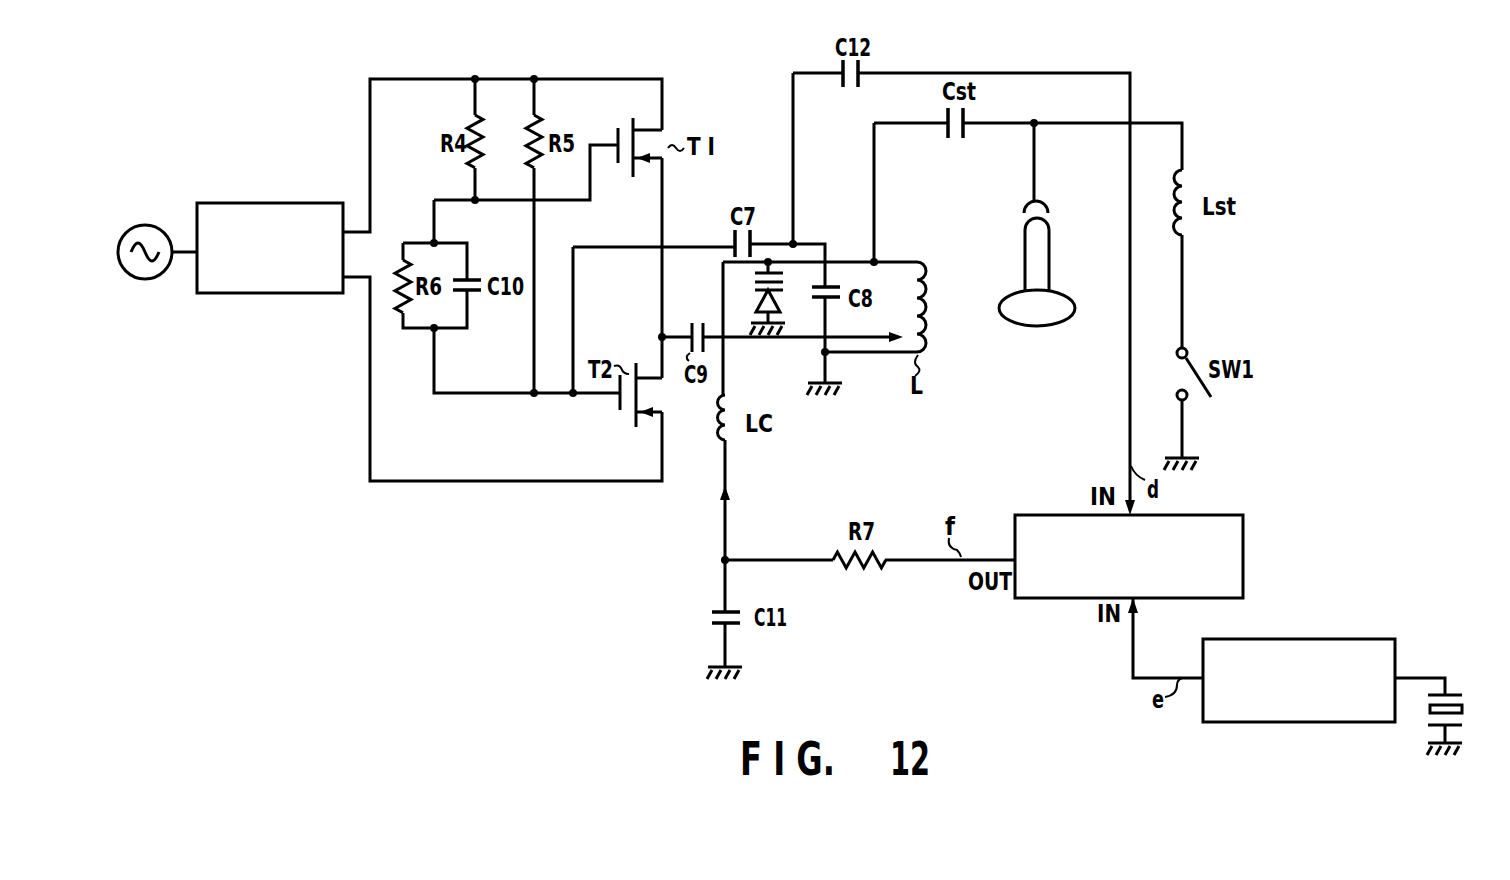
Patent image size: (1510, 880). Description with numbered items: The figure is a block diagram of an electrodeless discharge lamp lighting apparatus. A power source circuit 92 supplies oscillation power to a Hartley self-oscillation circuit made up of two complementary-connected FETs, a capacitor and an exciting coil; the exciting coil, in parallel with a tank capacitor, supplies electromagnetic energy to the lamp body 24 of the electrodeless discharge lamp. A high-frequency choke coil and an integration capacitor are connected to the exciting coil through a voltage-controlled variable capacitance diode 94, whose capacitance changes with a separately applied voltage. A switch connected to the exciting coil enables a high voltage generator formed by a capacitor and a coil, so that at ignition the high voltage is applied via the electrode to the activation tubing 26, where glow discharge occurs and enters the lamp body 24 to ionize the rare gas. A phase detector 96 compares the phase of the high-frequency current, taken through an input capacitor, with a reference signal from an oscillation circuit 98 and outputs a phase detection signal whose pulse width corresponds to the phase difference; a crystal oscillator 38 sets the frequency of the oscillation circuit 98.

The power source circuit 92 is at (306, 203).
The voltage-controlled variable capacitance diode 94 is at (786, 316).
The activation tubing 26 is at (1050, 240).
The lamp body 24 is at (1052, 326).
The phase detector 96 is at (1245, 560).
The oscillation circuit 98 is at (1343, 638).
The crystal oscillator 38 is at (1446, 706).